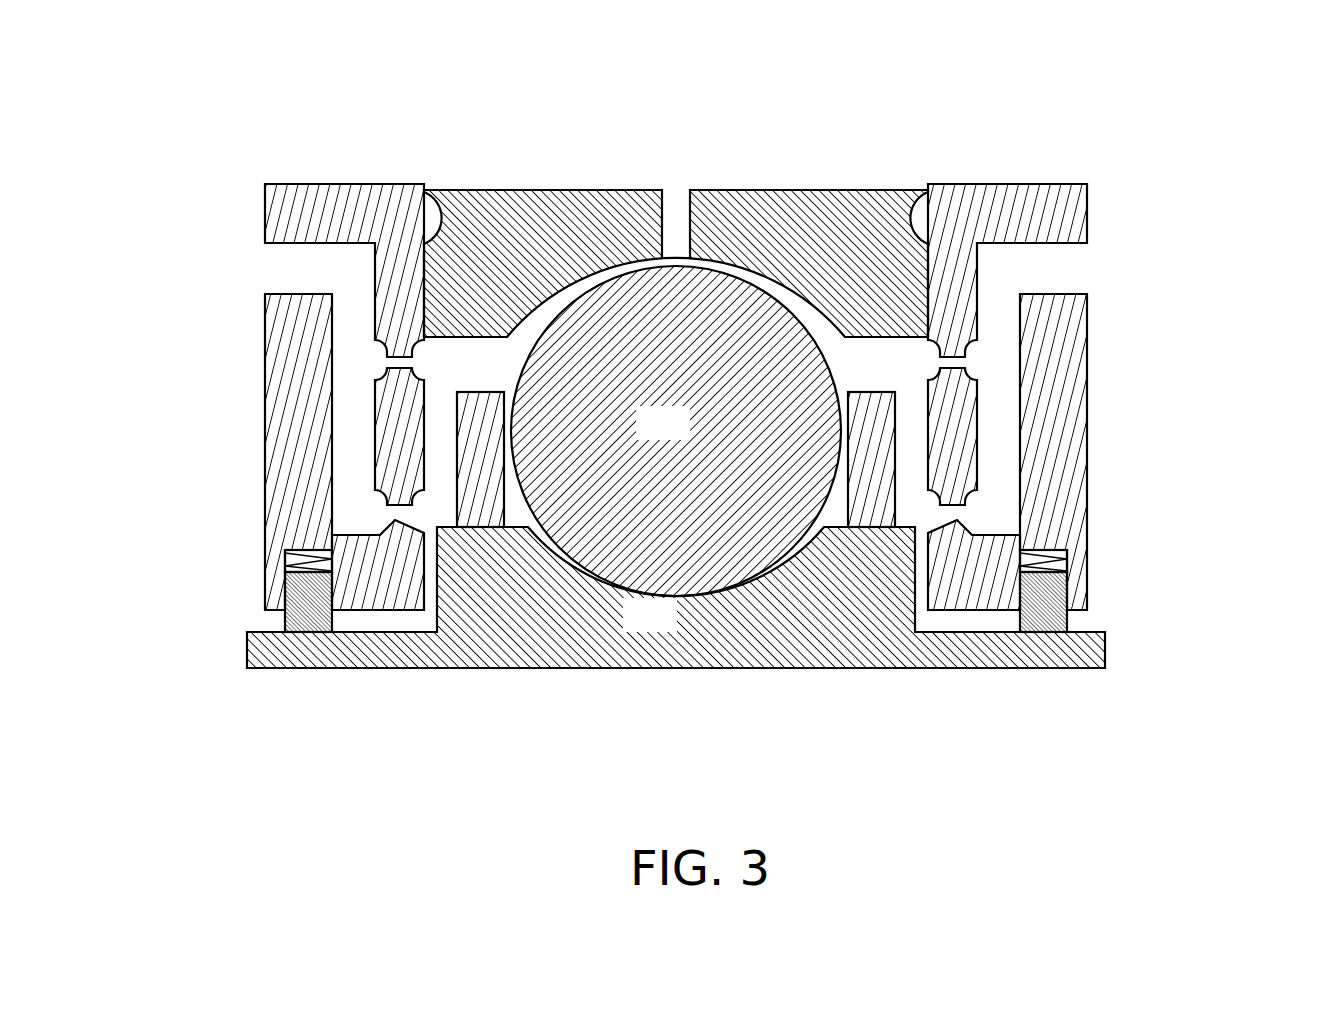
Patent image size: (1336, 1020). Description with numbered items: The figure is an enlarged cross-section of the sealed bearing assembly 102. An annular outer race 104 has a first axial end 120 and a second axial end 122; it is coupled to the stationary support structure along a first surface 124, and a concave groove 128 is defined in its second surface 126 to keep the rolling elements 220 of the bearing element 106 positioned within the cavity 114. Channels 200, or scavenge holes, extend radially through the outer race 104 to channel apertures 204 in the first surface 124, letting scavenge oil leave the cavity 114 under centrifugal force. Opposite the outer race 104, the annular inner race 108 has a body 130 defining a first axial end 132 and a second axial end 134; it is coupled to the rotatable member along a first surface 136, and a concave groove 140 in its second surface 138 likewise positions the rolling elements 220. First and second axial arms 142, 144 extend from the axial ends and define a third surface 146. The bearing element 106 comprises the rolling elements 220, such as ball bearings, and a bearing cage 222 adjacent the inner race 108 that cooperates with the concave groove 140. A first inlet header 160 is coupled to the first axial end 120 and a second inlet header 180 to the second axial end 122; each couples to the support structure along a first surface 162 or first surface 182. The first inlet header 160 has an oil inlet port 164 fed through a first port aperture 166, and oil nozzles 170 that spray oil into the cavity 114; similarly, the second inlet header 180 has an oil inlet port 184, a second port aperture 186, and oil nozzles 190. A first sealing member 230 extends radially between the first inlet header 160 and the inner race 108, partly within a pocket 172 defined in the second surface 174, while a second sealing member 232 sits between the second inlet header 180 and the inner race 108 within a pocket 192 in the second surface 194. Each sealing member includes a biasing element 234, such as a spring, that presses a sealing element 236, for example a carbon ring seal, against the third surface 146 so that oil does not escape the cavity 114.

The sealed bearing assembly 102 is at (1177, 172).
The outer race 104 is at (862, 190).
The bearing element 106 is at (497, 338).
The inner race 108 is at (673, 630).
The cavity 114 is at (870, 362).
The first axial end 120 is at (428, 190).
The second axial end 122 is at (918, 245).
The first surface 124 is at (608, 190).
The second surface 126 is at (792, 303).
The concave groove 128 is at (738, 255).
The body 130 is at (762, 630).
The first axial end 132 is at (457, 630).
The second axial end 134 is at (913, 604).
The first surface 136 is at (625, 650).
The second surface 138 is at (543, 537).
The concave groove 140 is at (590, 582).
The first axial arm 142 is at (312, 657).
The second axial arm 144 is at (1037, 648).
The third surface 146 is at (405, 631).
The first inlet header 160 is at (285, 170).
The first surface 162 is at (355, 184).
The oil inlet port 164 is at (288, 300).
The first port aperture 166 is at (255, 250).
The oil nozzle 170 is at (420, 374).
The pocket 172 is at (297, 550).
The second surface 174 is at (263, 608).
The second inlet header 180 is at (1090, 176).
The first surface 182 is at (1057, 183).
The oil inlet port 184 is at (1055, 296).
The second port aperture 186 is at (1082, 263).
The oil nozzle 190 is at (932, 378).
The pocket 192 is at (1042, 550).
The second surface 194 is at (1085, 612).
The channel 200 is at (692, 213).
The channel aperture 204 is at (672, 188).
The rolling element 220 is at (686, 438).
The bearing cage 222 is at (883, 463).
The first sealing member 230 is at (268, 584).
The second sealing member 232 is at (1088, 588).
The biasing element 234 is at (330, 568).
The sealing element 236 is at (302, 615).